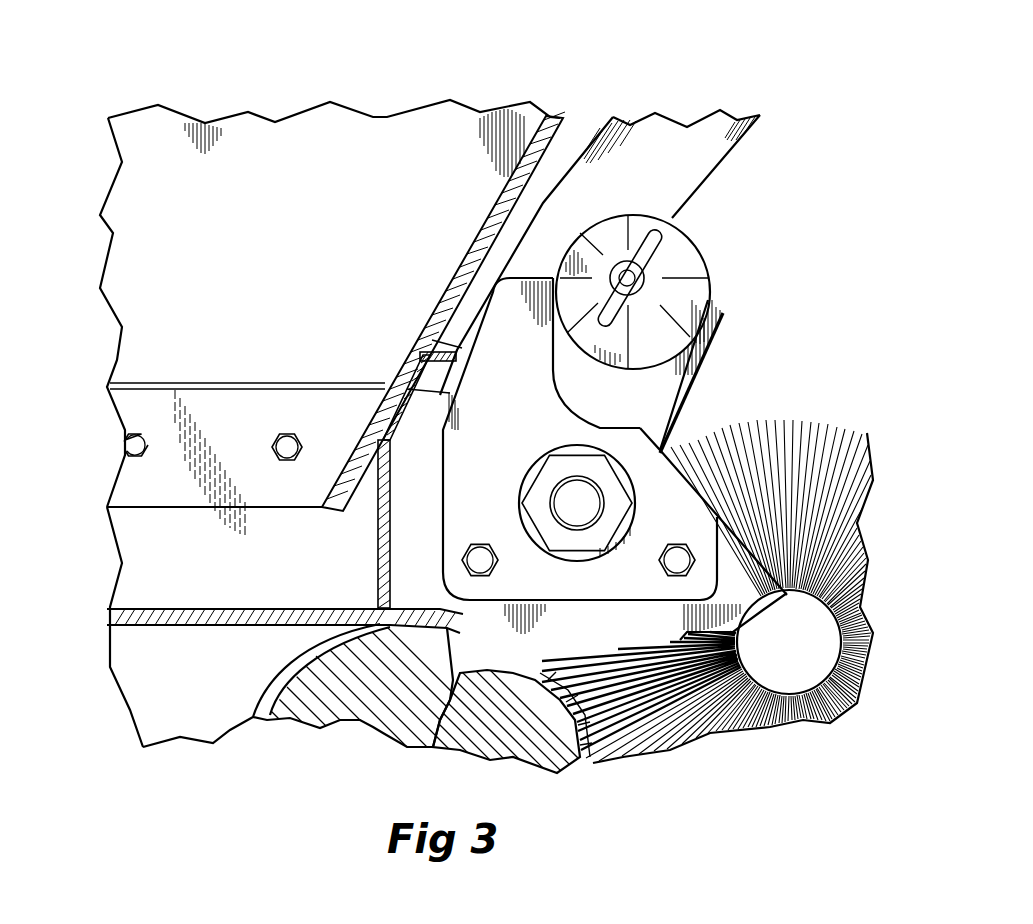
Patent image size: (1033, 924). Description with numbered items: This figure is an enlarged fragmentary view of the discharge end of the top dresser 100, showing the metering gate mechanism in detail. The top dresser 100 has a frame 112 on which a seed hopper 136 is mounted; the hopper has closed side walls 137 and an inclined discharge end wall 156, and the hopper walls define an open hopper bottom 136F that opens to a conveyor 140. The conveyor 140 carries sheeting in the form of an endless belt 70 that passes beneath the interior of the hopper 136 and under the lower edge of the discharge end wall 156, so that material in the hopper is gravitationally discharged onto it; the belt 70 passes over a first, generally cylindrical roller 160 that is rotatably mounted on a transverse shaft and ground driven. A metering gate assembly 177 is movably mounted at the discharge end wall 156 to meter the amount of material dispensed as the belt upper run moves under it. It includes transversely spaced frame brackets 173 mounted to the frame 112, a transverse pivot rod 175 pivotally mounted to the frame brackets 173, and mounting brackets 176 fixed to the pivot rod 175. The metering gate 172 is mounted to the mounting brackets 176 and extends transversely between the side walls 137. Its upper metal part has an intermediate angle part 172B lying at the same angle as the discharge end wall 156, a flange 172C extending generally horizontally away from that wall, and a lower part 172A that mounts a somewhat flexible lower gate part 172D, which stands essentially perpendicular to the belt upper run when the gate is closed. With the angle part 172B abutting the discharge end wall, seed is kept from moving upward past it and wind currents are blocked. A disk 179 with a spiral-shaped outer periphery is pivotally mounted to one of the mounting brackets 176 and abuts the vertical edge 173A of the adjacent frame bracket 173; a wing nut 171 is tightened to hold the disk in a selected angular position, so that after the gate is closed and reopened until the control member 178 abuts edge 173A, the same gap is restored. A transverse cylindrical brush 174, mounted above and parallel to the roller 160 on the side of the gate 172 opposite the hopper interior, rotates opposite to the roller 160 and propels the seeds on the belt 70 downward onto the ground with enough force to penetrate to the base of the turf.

The endless belt 70 is at (192, 626).
The top dresser 100 is at (795, 336).
The frame 112 is at (478, 660).
The seed hopper 136 is at (373, 105).
The open hopper bottom 136F is at (143, 563).
The closed side walls 137 is at (250, 128).
The conveyor 140 is at (240, 707).
The discharge end wall 156 is at (580, 99).
The first cylindrical roller 160 is at (390, 708).
The wing nut 171 is at (663, 221).
The metering gate 172 is at (392, 480).
The lower part 172A is at (378, 460).
The intermediate angle part 172B is at (447, 391).
The flange 172C is at (458, 359).
The lower gate part 172D is at (376, 588).
The frame bracket 173 is at (672, 443).
The vertical edge 173A is at (557, 355).
The transverse cylindrical brush 174 is at (827, 428).
The transverse pivot rod 175 is at (568, 500).
The mounting bracket 176 is at (458, 346).
The metering gate assembly 177 is at (680, 108).
The control member 178 is at (752, 127).
The disk 179 is at (693, 253).